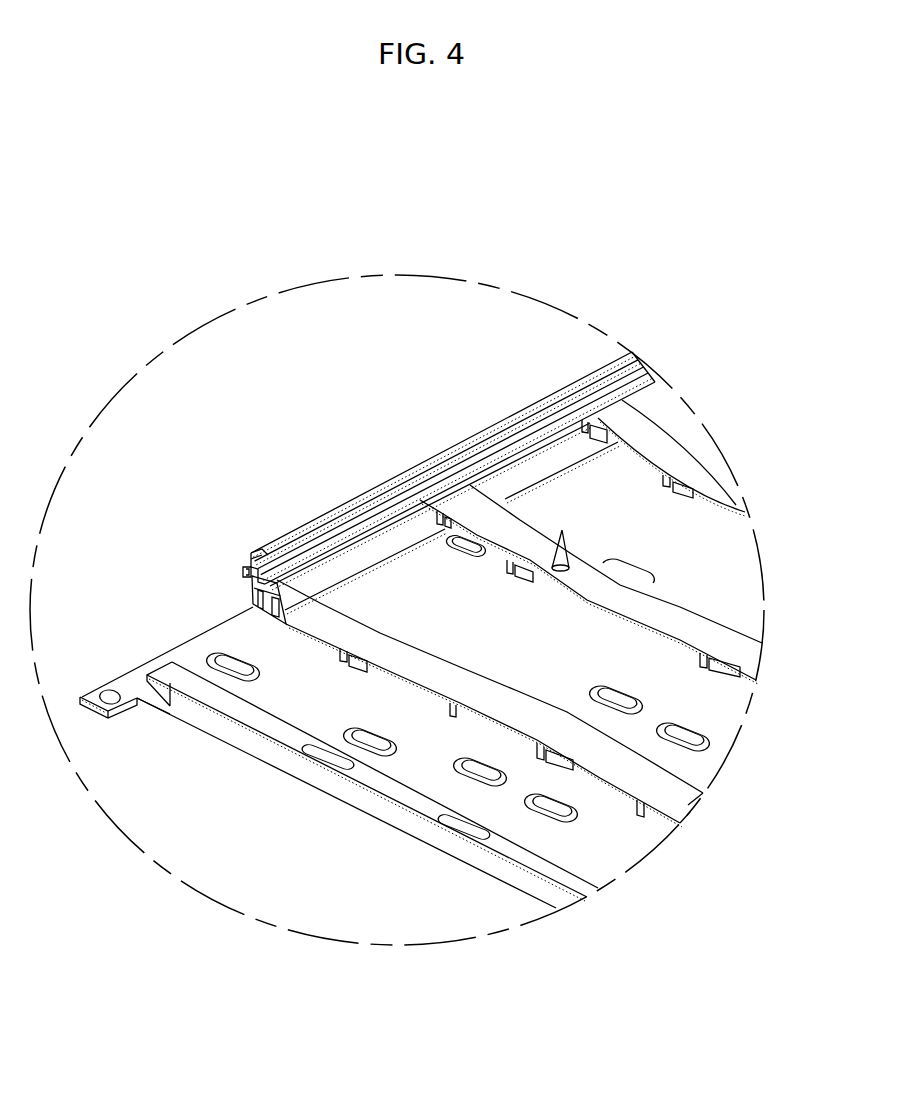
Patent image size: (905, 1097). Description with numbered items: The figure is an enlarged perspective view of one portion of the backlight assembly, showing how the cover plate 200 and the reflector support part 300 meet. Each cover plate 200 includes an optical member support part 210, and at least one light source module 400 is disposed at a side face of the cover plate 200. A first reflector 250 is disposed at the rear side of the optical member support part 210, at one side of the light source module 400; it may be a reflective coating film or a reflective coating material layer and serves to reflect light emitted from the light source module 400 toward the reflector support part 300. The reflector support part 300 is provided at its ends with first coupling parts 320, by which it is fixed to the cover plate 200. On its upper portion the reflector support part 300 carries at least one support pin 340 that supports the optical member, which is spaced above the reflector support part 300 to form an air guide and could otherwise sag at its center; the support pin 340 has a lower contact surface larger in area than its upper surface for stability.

The cover plate 200 is at (453, 468).
The optical member support part 210 is at (413, 503).
The first reflector 250 is at (256, 552).
The reflector support part 300 is at (427, 662).
The first coupling part 320 is at (250, 617).
The support pin 340 is at (556, 548).
The light source module 400 is at (242, 566).